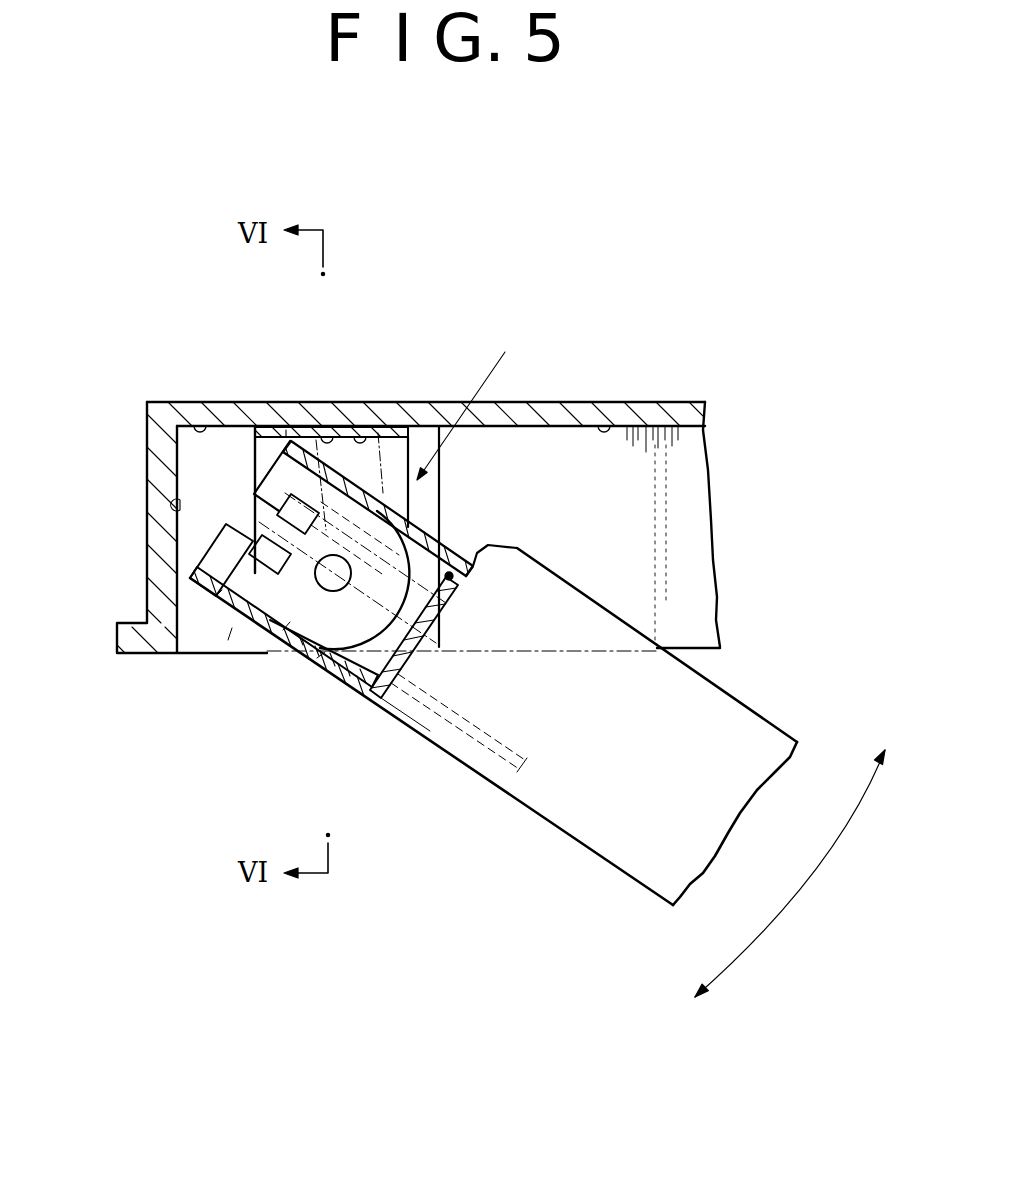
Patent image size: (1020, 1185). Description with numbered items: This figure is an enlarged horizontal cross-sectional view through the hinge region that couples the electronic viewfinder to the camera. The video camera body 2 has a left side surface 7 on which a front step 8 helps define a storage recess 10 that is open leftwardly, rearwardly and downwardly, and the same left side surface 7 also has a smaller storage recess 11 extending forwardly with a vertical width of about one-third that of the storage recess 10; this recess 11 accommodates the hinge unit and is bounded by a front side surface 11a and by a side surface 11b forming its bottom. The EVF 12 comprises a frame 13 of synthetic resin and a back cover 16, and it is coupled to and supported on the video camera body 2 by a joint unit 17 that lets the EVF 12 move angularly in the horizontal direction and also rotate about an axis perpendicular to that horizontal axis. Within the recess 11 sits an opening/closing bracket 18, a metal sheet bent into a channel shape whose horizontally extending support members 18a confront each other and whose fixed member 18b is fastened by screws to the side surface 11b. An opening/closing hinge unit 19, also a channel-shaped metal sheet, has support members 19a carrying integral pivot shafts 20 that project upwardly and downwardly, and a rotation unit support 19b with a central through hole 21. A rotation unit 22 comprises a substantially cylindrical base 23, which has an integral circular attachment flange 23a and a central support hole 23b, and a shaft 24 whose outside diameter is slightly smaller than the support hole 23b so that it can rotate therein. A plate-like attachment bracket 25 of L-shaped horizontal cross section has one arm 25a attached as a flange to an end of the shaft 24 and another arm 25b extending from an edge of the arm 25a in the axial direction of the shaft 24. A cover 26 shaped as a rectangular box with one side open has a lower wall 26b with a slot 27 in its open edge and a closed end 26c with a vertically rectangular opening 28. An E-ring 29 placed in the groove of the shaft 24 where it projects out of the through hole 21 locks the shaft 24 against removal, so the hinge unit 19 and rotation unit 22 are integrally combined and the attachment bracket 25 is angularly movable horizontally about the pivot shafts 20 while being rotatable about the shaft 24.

The video camera body 2 is at (690, 402).
The left side surface 7 is at (133, 656).
The front step 8 is at (440, 490).
The storage recess 10 is at (604, 421).
The storage recess 11 is at (207, 425).
The front side surface 11a is at (186, 503).
The side surface 11b is at (330, 427).
The EVF 12 is at (775, 722).
The frame 13 is at (732, 812).
The back cover 16 is at (617, 868).
The joint unit 17 is at (476, 400).
The opening/closing bracket 18 is at (255, 443).
The support members 18a is at (255, 465).
The fixed member 18b is at (373, 427).
The opening/closing hinge unit 19 is at (228, 640).
The support members 19a is at (317, 658).
The rotation unit support 19b is at (283, 630).
The pivot shafts 20 is at (440, 612).
The through hole 21 is at (286, 429).
The rotation unit 22 is at (447, 547).
The base 23 is at (436, 650).
The attachment flange 23a is at (412, 402).
The support hole 23b is at (343, 692).
The shaft 24 is at (262, 520).
The attachment bracket 25 is at (455, 688).
The arm 25a is at (545, 568).
The arm 25b is at (513, 763).
The cover 26 is at (203, 638).
The lower wall 26b is at (220, 553).
The closed end 26c is at (417, 733).
The slots 27 is at (262, 500).
The opening 28 is at (458, 587).
The E-ring 29 is at (240, 567).